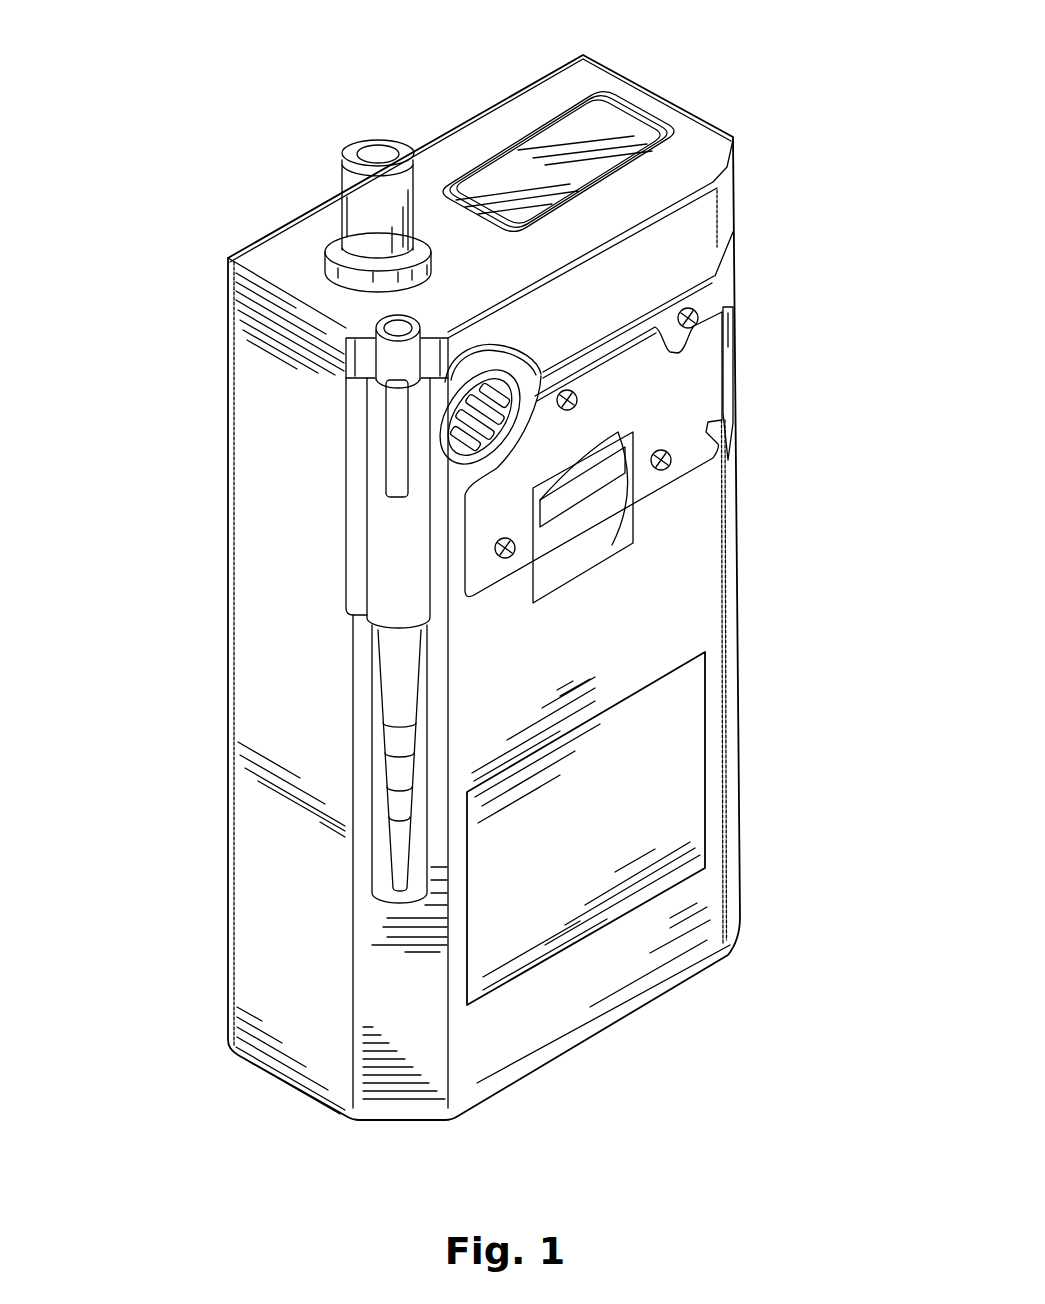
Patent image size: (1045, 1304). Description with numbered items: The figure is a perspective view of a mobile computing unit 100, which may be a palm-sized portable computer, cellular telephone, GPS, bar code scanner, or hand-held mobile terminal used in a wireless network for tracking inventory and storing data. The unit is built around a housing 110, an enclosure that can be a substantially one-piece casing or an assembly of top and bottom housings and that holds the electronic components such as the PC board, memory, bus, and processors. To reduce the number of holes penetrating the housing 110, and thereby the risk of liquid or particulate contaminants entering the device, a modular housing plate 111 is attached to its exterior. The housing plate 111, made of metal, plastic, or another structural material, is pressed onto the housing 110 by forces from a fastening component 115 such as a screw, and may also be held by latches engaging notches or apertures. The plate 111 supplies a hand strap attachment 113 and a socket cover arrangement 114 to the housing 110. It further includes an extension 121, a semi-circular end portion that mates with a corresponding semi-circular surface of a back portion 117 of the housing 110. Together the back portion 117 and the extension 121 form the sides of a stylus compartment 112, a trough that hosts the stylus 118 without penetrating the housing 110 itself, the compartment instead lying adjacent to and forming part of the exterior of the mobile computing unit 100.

The mobile computing unit 100 is at (817, 42).
The housing 110 is at (227, 332).
The housing plate 111 is at (456, 598).
The stylus compartment 112 is at (347, 638).
The hand strap attachment 113 is at (572, 522).
The socket cover arrangement 114 is at (736, 412).
The fastening component 115 is at (697, 315).
The back portion of the housing 117 is at (348, 357).
The stylus 118 is at (397, 328).
The extension 121 is at (374, 545).